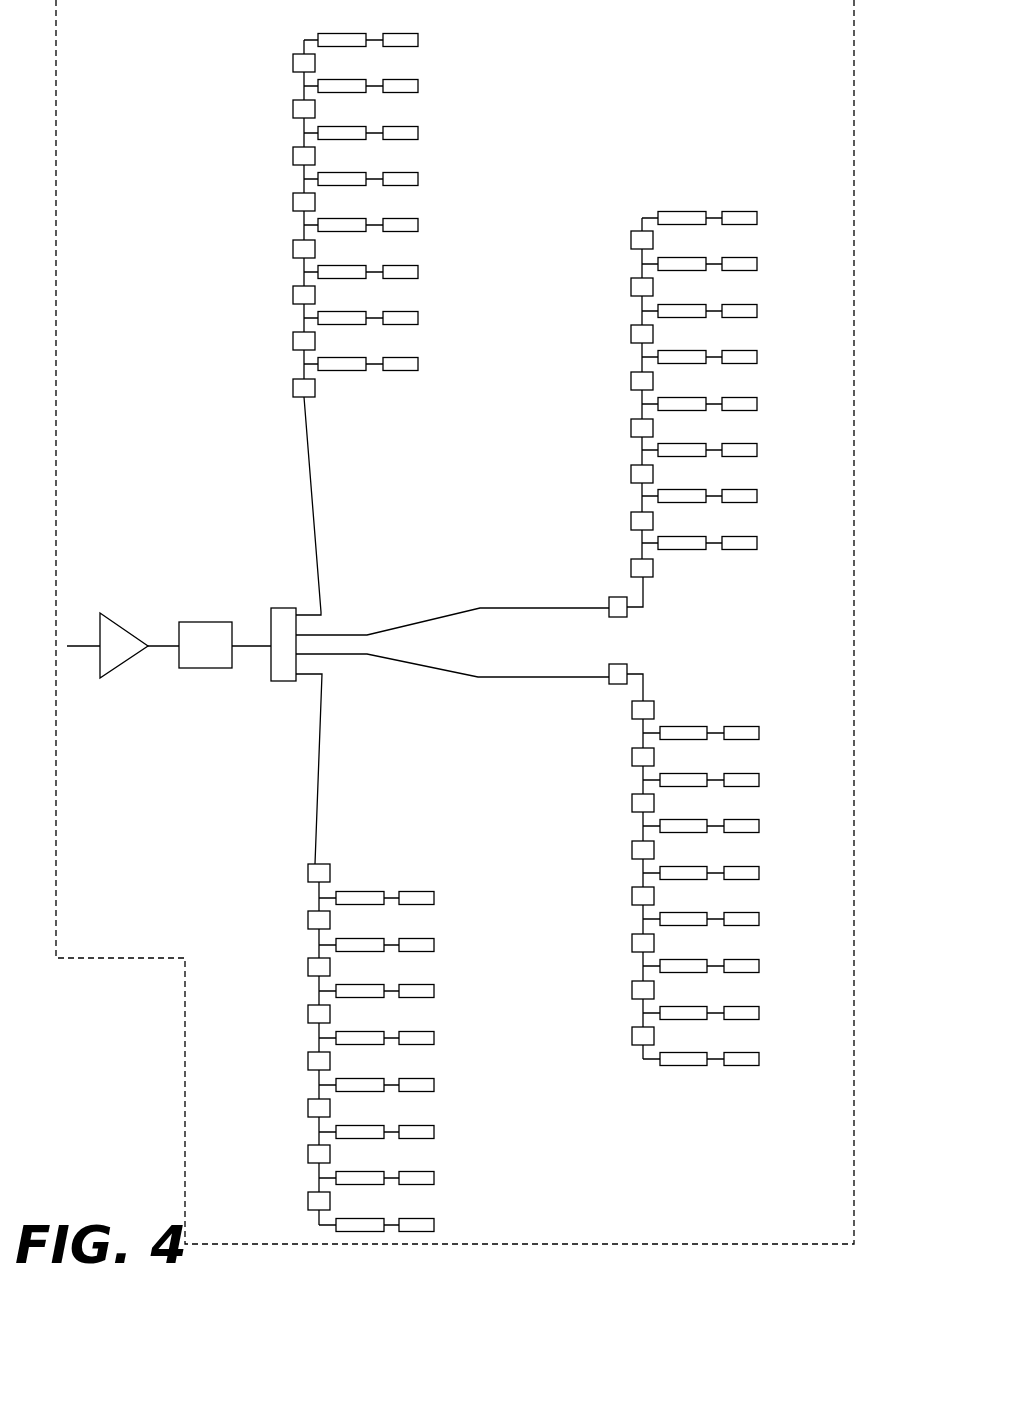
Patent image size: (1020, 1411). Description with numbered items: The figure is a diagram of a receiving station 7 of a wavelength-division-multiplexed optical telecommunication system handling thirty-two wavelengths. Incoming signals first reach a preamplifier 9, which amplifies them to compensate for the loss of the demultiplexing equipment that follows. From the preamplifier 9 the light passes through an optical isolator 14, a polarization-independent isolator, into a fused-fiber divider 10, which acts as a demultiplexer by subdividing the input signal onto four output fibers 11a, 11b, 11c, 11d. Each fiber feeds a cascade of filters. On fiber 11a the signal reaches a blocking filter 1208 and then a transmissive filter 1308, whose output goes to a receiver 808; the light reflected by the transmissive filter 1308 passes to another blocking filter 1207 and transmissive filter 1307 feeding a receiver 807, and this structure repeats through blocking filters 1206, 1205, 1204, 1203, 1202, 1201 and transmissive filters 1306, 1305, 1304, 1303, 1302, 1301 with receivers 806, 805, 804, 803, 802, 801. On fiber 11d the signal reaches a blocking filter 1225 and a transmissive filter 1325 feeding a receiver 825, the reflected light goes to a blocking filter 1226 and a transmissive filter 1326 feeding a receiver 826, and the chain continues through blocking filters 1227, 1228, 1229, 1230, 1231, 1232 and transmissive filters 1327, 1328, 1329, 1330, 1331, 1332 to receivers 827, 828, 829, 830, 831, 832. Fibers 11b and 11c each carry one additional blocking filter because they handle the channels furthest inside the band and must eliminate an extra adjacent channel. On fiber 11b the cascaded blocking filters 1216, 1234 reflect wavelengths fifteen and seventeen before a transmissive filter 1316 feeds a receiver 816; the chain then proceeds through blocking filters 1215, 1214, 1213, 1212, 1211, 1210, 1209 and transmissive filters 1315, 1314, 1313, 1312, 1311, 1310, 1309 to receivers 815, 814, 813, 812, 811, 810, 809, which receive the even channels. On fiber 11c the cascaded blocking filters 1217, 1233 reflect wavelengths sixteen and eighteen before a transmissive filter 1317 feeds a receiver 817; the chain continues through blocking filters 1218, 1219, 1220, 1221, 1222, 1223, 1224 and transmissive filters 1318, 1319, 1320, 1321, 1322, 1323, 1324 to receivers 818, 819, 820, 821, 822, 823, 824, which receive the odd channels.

The receiving station 7 is at (137, 959).
The preamplifier 9 is at (118, 622).
The optical isolator 14 is at (208, 622).
The fused-fiber divider 10 is at (283, 608).
The fiber 11a is at (313, 507).
The fiber 11b is at (487, 608).
The fiber 11c is at (487, 677).
The fiber 11d is at (320, 758).
The blocking filter 1201 is at (292, 63).
The blocking filter 1202 is at (292, 109).
The blocking filter 1203 is at (292, 156).
The blocking filter 1204 is at (292, 202).
The blocking filter 1205 is at (292, 249).
The blocking filter 1206 is at (292, 295).
The blocking filter 1207 is at (292, 341).
The blocking filter 1208 is at (292, 388).
The blocking filter 1209 is at (630, 240).
The blocking filter 1210 is at (630, 287).
The blocking filter 1211 is at (630, 334).
The blocking filter 1212 is at (630, 381).
The blocking filter 1213 is at (630, 428).
The blocking filter 1214 is at (630, 474).
The blocking filter 1215 is at (630, 521).
The blocking filter 1216 is at (630, 568).
The blocking filter 1217 is at (630, 712).
The blocking filter 1218 is at (631, 757).
The blocking filter 1219 is at (631, 803).
The blocking filter 1220 is at (631, 850).
The blocking filter 1221 is at (631, 896).
The blocking filter 1222 is at (631, 943).
The blocking filter 1223 is at (631, 990).
The blocking filter 1224 is at (631, 1036).
The blocking filter 1225 is at (307, 873).
The blocking filter 1226 is at (307, 920).
The blocking filter 1227 is at (307, 967).
The blocking filter 1228 is at (307, 1014).
The blocking filter 1229 is at (307, 1061).
The blocking filter 1230 is at (307, 1108).
The blocking filter 1231 is at (307, 1154).
The blocking filter 1232 is at (307, 1201).
The blocking filter 1233 is at (609, 687).
The blocking filter 1234 is at (609, 603).
The transmissive filter 1301 is at (323, 33).
The transmissive filter 1302 is at (323, 79).
The transmissive filter 1303 is at (323, 126).
The transmissive filter 1304 is at (323, 172).
The transmissive filter 1305 is at (323, 218).
The transmissive filter 1306 is at (323, 265).
The transmissive filter 1307 is at (323, 311).
The transmissive filter 1308 is at (323, 357).
The transmissive filter 1309 is at (663, 211).
The transmissive filter 1310 is at (663, 257).
The transmissive filter 1311 is at (663, 304).
The transmissive filter 1312 is at (663, 350).
The transmissive filter 1313 is at (663, 397).
The transmissive filter 1314 is at (663, 443).
The transmissive filter 1315 is at (663, 489).
The transmissive filter 1316 is at (663, 536).
The transmissive filter 1317 is at (665, 726).
The transmissive filter 1318 is at (665, 773).
The transmissive filter 1319 is at (665, 819).
The transmissive filter 1320 is at (665, 866).
The transmissive filter 1321 is at (665, 912).
The transmissive filter 1322 is at (665, 959).
The transmissive filter 1323 is at (665, 1006).
The transmissive filter 1324 is at (665, 1052).
The transmissive filter 1325 is at (341, 891).
The transmissive filter 1326 is at (341, 938).
The transmissive filter 1327 is at (341, 984).
The transmissive filter 1328 is at (341, 1031).
The transmissive filter 1329 is at (341, 1078).
The transmissive filter 1330 is at (341, 1125).
The transmissive filter 1331 is at (341, 1171).
The transmissive filter 1332 is at (341, 1218).
The receiver 801 is at (393, 33).
The receiver 802 is at (393, 79).
The receiver 803 is at (393, 126).
The receiver 804 is at (393, 172).
The receiver 805 is at (393, 218).
The receiver 806 is at (393, 265).
The receiver 807 is at (393, 311).
The receiver 808 is at (393, 357).
The receiver 809 is at (733, 211).
The receiver 810 is at (733, 257).
The receiver 811 is at (733, 304).
The receiver 812 is at (733, 350).
The receiver 813 is at (733, 397).
The receiver 814 is at (733, 443).
The receiver 815 is at (733, 489).
The receiver 816 is at (733, 536).
The receiver 817 is at (735, 726).
The receiver 818 is at (735, 773).
The receiver 819 is at (735, 819).
The receiver 820 is at (735, 866).
The receiver 821 is at (735, 912).
The receiver 822 is at (735, 959).
The receiver 823 is at (735, 1006).
The receiver 824 is at (735, 1052).
The receiver 825 is at (408, 891).
The receiver 826 is at (408, 938).
The receiver 827 is at (408, 984).
The receiver 828 is at (408, 1031).
The receiver 829 is at (408, 1078).
The receiver 830 is at (408, 1125).
The receiver 831 is at (408, 1171).
The receiver 832 is at (408, 1218).